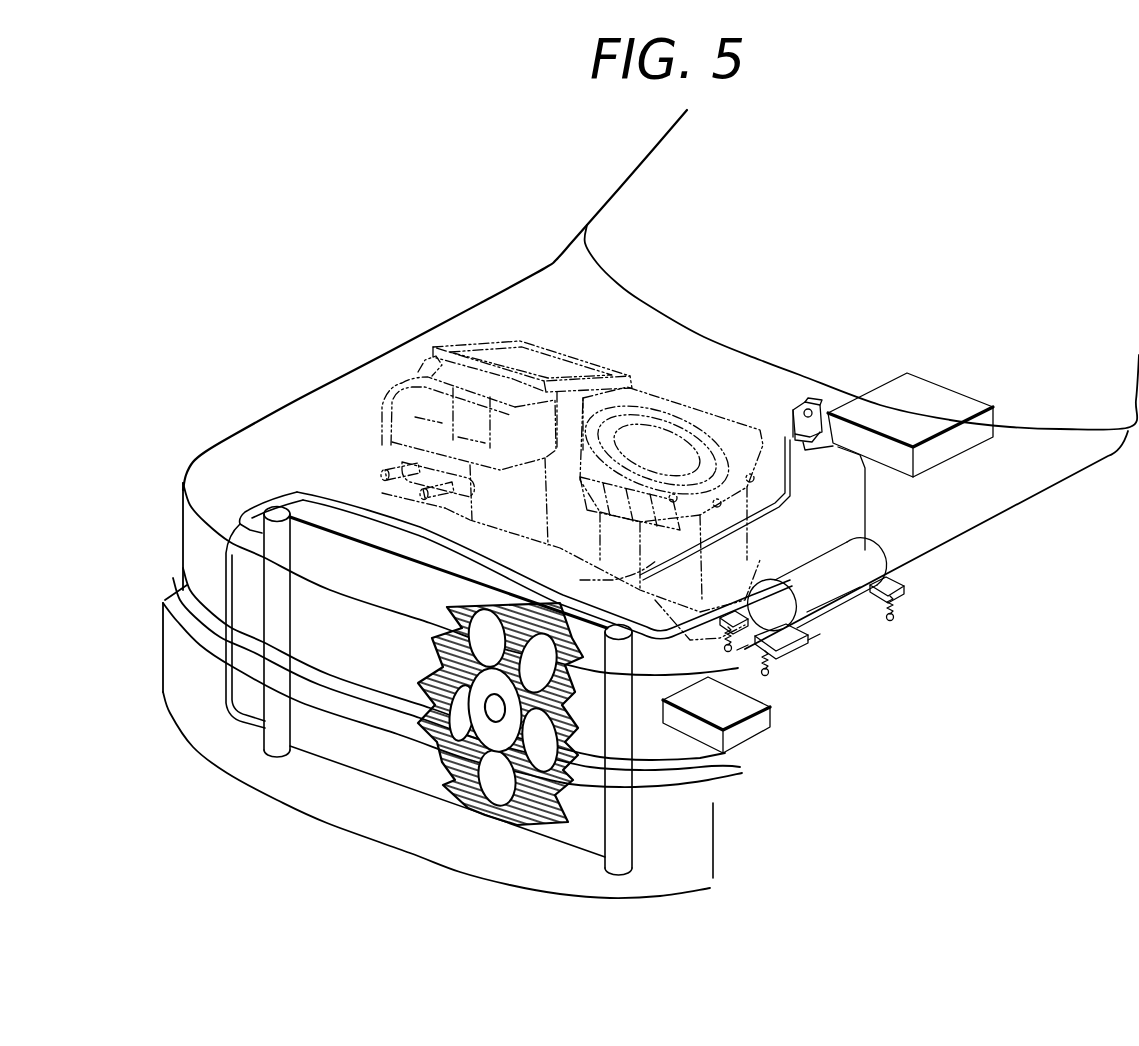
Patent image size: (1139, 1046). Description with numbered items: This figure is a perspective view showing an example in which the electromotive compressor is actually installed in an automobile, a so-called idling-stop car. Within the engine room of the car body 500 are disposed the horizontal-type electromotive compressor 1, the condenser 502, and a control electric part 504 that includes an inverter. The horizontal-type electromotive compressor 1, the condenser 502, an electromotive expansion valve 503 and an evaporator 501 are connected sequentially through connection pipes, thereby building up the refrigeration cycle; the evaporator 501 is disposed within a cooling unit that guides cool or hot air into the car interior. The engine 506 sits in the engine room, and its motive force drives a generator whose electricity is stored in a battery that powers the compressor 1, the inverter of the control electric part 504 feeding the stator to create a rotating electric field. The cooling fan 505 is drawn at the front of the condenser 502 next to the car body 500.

The horizontal-type electromotive compressor 1 is at (838, 607).
The car body 500 is at (293, 403).
The evaporator 501 is at (957, 448).
The condenser 502 is at (628, 813).
The electromotive expansion valve 503 is at (823, 411).
The control electric part 504 is at (758, 725).
The cooling fan 505 is at (493, 793).
The engine 506 is at (417, 370).